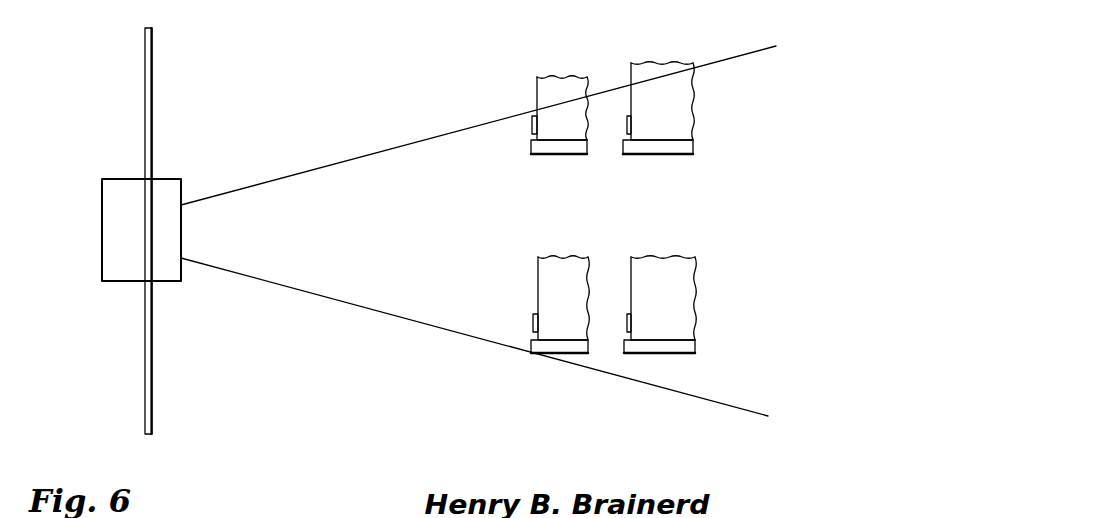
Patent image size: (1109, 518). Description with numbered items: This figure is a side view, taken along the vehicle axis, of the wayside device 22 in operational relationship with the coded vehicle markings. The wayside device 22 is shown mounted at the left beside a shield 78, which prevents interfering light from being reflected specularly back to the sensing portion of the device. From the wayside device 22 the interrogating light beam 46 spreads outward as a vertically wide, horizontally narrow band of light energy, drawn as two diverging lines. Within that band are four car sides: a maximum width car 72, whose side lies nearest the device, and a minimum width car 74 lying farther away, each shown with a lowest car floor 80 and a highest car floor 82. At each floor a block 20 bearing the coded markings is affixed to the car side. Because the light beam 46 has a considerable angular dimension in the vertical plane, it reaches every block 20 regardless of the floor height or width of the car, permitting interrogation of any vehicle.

The block 20 is at (530, 128).
The wayside device 22 is at (92, 228).
The light beam 46 is at (278, 182).
The maximum width car 72 is at (531, 145).
The minimum width car 74 is at (623, 147).
The shield 78 is at (149, 30).
The lowest car floor 80 is at (563, 348).
The highest car floor 82 is at (562, 148).